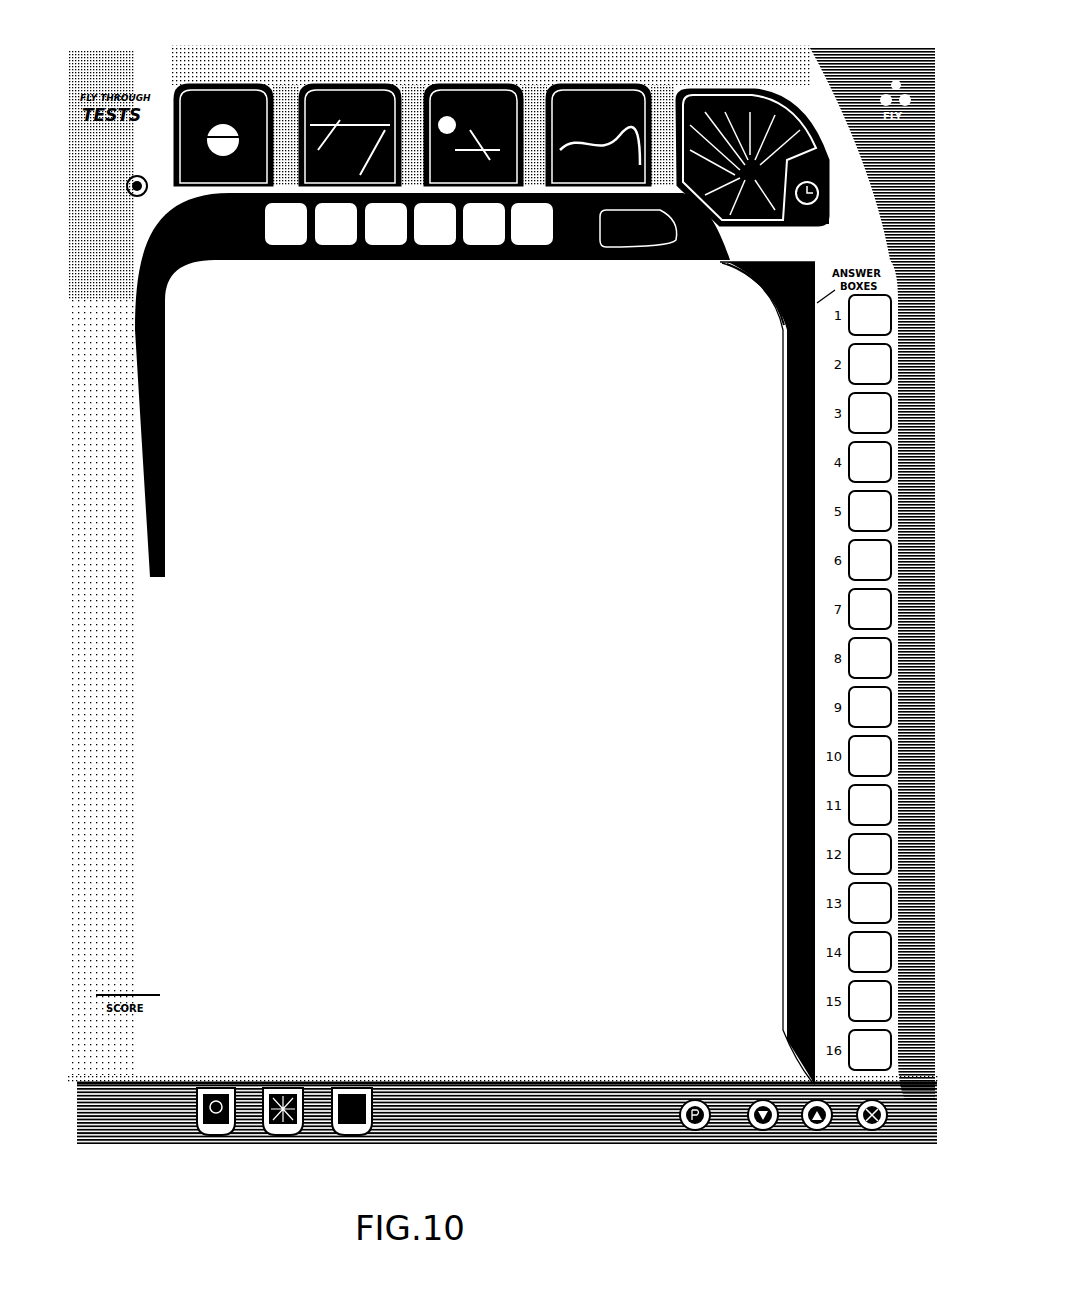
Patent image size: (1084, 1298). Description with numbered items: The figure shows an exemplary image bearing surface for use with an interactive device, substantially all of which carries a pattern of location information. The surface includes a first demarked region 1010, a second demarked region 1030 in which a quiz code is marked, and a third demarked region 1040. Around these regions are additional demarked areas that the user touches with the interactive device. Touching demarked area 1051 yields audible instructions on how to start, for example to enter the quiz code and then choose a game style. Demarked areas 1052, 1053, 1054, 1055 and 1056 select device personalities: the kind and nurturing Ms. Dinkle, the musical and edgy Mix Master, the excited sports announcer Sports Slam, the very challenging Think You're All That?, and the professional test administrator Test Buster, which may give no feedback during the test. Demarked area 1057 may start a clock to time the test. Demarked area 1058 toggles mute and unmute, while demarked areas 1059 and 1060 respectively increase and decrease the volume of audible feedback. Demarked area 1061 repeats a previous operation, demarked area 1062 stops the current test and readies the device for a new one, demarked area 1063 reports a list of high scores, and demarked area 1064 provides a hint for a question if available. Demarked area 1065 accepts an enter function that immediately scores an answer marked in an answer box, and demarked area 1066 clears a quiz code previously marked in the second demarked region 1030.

The first demarked region 1010 is at (815, 1080).
The second demarked region 1030 is at (552, 264).
The third demarked region 1040 is at (415, 832).
The demarked area 1051 is at (133, 200).
The demarked area 1052 is at (214, 68).
The demarked area 1053 is at (340, 70).
The demarked area 1054 is at (470, 78).
The demarked area 1055 is at (595, 78).
The demarked area 1056 is at (738, 78).
The demarked area 1057 is at (804, 230).
The demarked area 1058 is at (870, 1143).
The demarked area 1059 is at (815, 1147).
The demarked area 1060 is at (763, 1143).
The demarked area 1061 is at (688, 1142).
The demarked area 1062 is at (370, 1150).
The demarked area 1063 is at (283, 1150).
The demarked area 1064 is at (205, 1152).
The demarked area 1065 is at (757, 287).
The demarked area 1066 is at (622, 265).